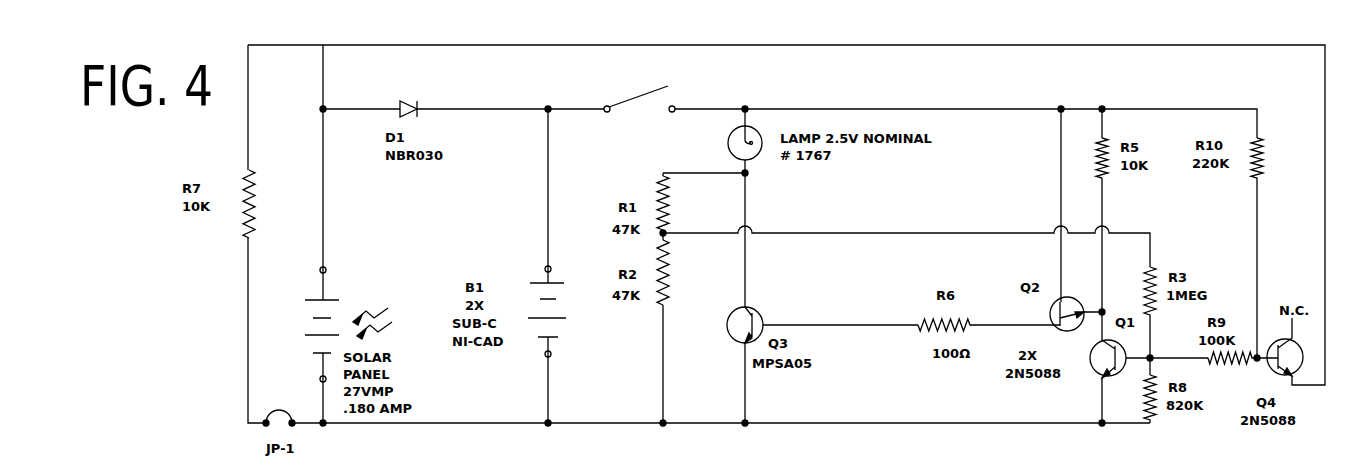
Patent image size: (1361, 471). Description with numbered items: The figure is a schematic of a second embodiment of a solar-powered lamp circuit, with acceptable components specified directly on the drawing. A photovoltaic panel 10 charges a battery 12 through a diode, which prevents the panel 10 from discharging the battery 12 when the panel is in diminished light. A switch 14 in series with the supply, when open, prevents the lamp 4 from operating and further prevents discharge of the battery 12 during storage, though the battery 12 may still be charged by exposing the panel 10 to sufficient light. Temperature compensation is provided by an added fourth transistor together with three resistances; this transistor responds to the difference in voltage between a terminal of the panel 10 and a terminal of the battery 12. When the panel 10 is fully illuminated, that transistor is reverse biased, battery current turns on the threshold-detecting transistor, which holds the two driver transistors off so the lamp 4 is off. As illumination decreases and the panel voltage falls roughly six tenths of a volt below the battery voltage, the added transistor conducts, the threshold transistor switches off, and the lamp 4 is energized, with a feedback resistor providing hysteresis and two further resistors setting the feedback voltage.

The lamp 4 is at (728, 143).
The photovoltaic panel 10 is at (292, 300).
The battery 12 is at (578, 290).
The switch 14 is at (633, 99).